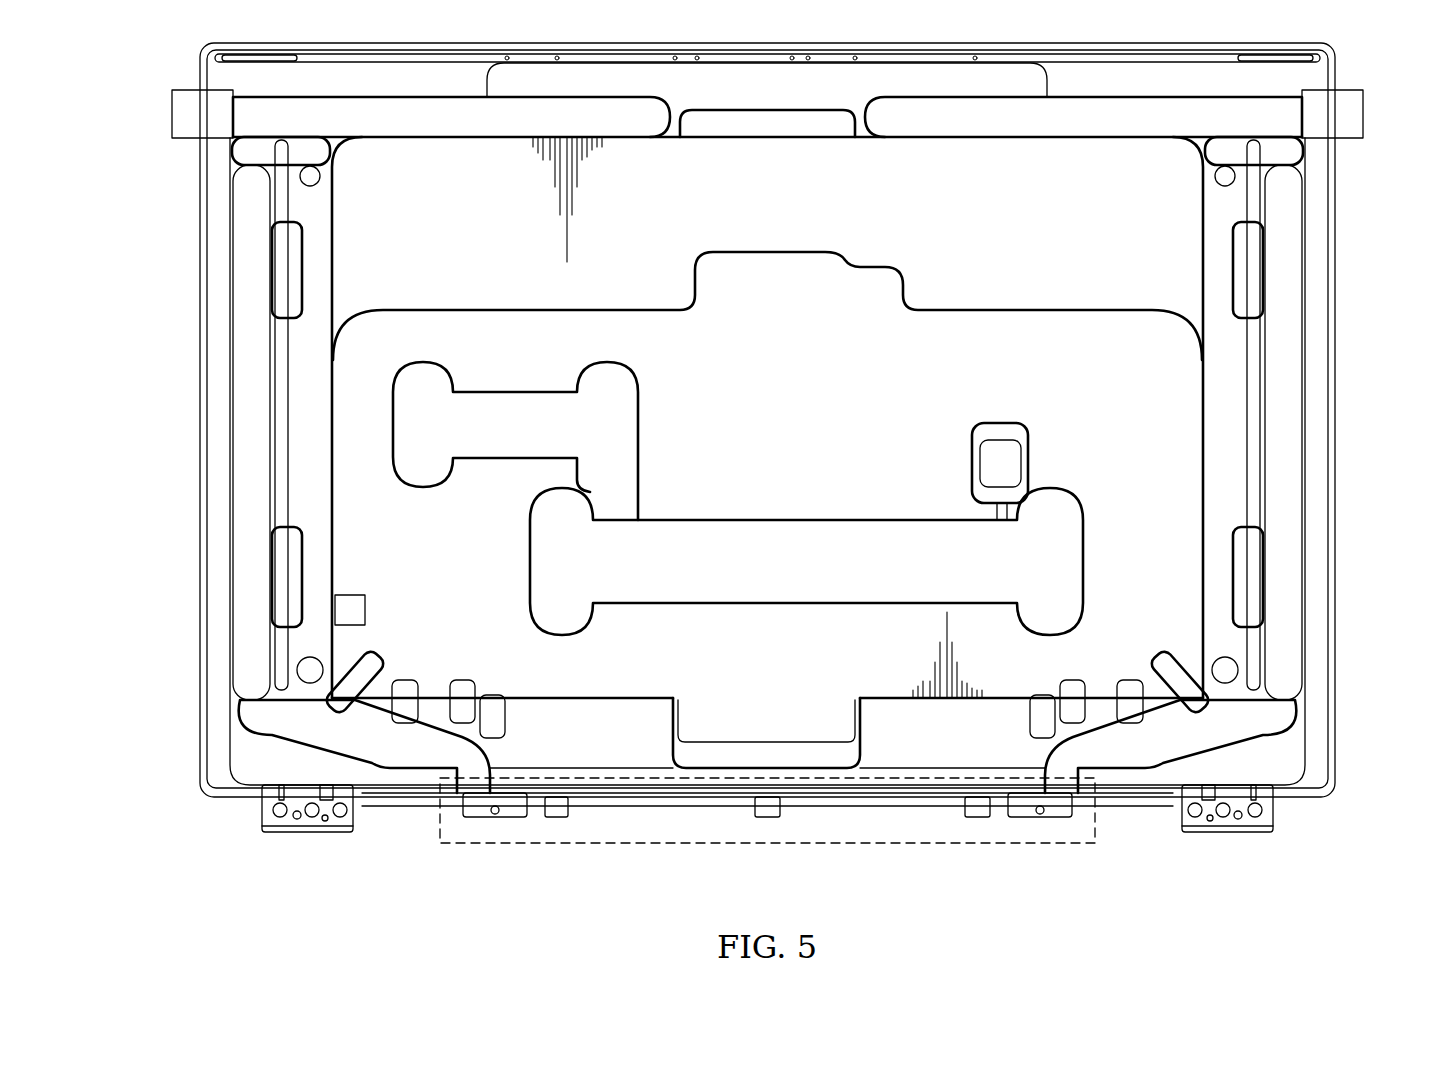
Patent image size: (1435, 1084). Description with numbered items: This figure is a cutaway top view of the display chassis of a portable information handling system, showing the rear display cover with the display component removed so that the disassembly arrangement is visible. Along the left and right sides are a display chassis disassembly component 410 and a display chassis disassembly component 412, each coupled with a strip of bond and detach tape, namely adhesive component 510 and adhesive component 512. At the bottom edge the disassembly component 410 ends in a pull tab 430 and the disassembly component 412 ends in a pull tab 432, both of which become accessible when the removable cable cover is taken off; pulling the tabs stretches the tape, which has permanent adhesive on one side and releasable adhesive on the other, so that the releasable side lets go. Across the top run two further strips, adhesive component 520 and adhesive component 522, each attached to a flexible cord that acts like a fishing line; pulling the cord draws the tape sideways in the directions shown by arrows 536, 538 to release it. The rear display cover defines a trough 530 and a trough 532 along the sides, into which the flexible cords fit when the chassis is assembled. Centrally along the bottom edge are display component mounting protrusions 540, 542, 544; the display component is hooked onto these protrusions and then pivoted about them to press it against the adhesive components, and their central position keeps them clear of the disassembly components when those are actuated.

The display chassis disassembly component 410 is at (380, 747).
The display chassis disassembly component 412 is at (1158, 747).
The pull tab 430 is at (497, 820).
The pull tab 432 is at (1040, 820).
The adhesive component 510 is at (247, 537).
The adhesive component 512 is at (1288, 537).
The adhesive component 520 is at (462, 127).
The adhesive component 522 is at (1073, 127).
The trough 530 is at (282, 442).
The trough 532 is at (1253, 442).
The arrow 536 is at (180, 113).
The arrow 538 is at (1355, 113).
The display component mounting protrusion 540 is at (556, 820).
The display component mounting protrusion 542 is at (767, 820).
The display component mounting protrusion 544 is at (977, 820).